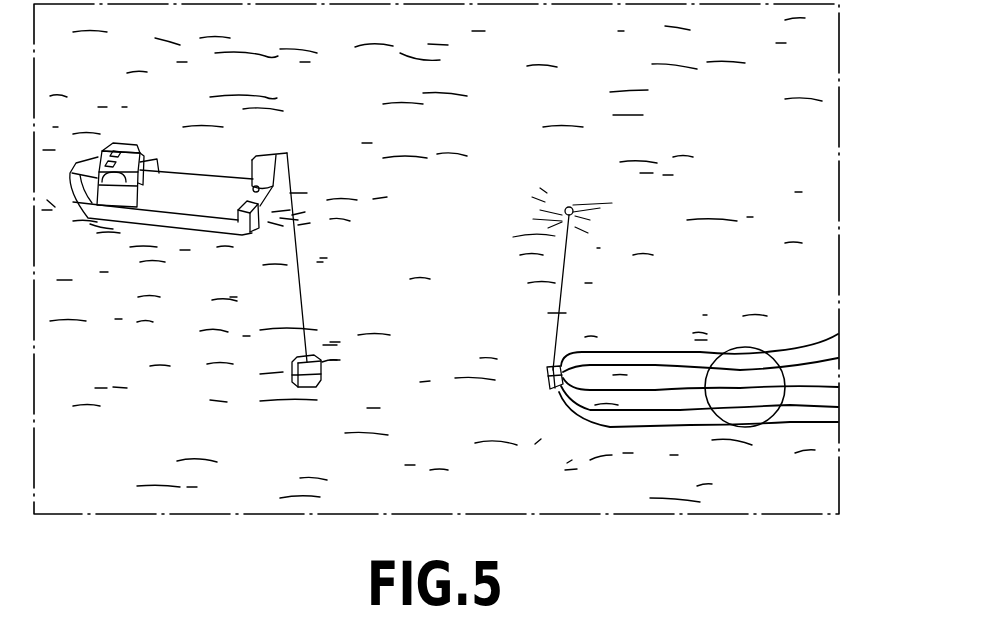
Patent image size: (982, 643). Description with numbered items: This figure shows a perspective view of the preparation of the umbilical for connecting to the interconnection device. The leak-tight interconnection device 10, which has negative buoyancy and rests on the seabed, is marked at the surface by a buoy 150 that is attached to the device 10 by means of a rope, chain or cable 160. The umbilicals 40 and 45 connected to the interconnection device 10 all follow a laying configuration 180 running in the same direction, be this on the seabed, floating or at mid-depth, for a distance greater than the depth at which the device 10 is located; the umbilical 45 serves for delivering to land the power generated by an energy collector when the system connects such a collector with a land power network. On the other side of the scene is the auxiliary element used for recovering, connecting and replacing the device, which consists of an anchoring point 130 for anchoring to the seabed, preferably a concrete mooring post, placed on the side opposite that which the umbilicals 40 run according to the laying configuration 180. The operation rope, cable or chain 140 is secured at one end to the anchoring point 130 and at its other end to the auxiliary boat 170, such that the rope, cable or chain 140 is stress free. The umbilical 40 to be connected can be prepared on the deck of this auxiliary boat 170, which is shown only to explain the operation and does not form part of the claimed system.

The auxiliary boat 170 is at (183, 195).
The operation rope, cable or chain 140 is at (300, 292).
The anchoring point 130 is at (298, 387).
The buoy 150 is at (568, 206).
The rope, chain or cable 160 is at (558, 300).
The leak-tight interconnection device 10 is at (538, 370).
The umbilical 40 is at (668, 410).
The umbilical 45 is at (668, 426).
The laying configuration 180 is at (745, 426).